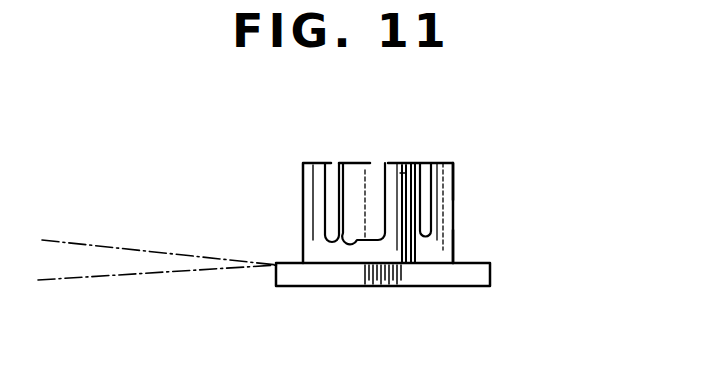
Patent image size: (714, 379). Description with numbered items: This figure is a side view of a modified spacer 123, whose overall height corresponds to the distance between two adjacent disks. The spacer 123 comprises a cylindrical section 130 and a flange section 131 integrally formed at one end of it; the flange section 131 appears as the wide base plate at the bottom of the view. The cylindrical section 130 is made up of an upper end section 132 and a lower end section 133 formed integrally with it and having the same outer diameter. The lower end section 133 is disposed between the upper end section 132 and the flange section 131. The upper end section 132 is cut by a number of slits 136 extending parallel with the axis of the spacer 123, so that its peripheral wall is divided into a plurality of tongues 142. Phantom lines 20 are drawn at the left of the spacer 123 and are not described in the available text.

The flat cable / sheet (phantom) 20 is at (137, 248).
The spacer 123 is at (313, 163).
The cylindrical section 130 is at (416, 215).
The flange section 131 is at (455, 275).
The upper end section 132 is at (453, 178).
The lower end section 133 is at (450, 248).
The slits 136 is at (385, 240).
The tongues 142 is at (395, 162).